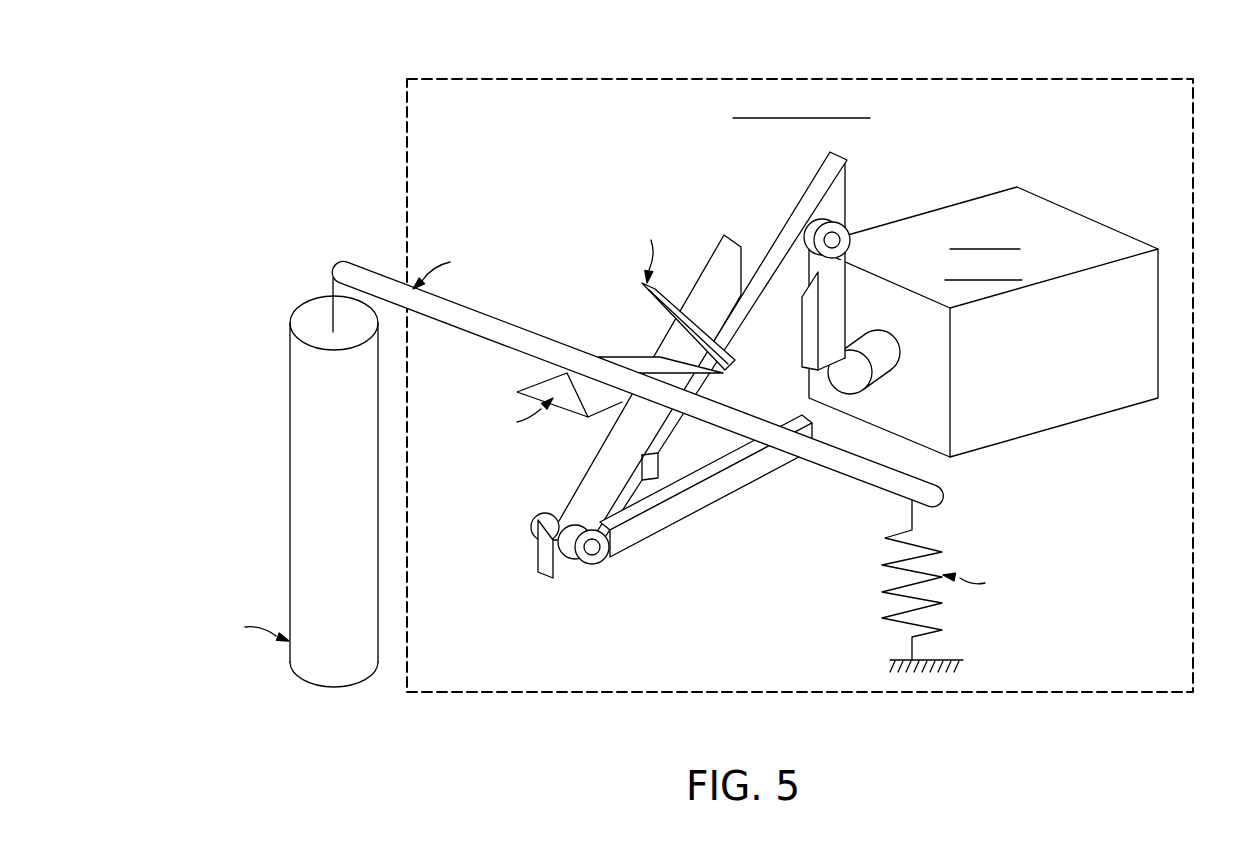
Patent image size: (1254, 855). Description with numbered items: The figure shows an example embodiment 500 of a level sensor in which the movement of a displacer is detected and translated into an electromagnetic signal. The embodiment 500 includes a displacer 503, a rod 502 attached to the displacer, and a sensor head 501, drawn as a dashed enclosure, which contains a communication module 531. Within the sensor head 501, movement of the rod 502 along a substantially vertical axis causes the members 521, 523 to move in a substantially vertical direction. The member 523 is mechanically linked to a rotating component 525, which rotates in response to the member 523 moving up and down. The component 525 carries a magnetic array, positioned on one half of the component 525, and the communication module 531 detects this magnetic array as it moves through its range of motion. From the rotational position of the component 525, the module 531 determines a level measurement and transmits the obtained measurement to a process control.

The embodiment of the level sensor 500 is at (826, 48).
The sensor head 501 is at (1140, 116).
The rod 502 is at (486, 312).
The displacer 503 is at (357, 399).
The member 521 is at (646, 558).
The member 523 is at (789, 189).
The rotating component 525 is at (900, 348).
The communication module 531 is at (1108, 333).